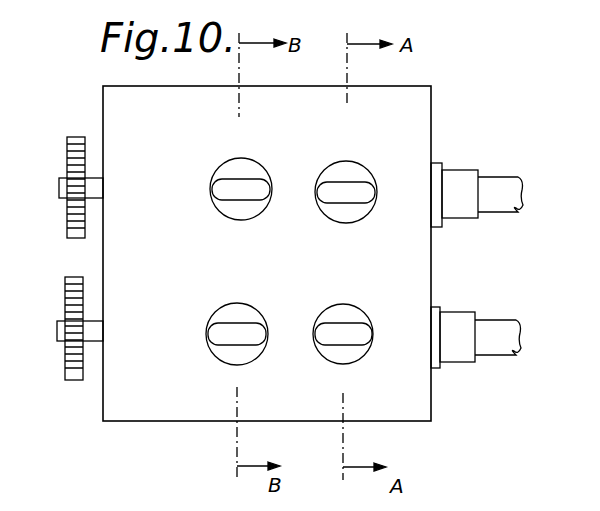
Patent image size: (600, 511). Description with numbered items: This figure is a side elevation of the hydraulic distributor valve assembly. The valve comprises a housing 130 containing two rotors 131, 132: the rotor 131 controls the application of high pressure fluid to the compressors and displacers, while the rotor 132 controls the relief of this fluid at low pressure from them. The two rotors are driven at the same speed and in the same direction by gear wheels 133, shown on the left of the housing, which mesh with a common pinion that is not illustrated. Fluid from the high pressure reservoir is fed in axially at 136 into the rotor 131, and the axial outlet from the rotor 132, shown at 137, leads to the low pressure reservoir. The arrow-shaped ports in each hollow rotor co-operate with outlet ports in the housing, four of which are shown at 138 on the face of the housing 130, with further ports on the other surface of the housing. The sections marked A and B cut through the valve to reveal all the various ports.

The housing 130 is at (388, 256).
The rotor 131 is at (440, 173).
The rotor 132 is at (433, 313).
The gear wheels 133 is at (72, 138).
The axial inlet 136 is at (505, 190).
The axial outlet 137 is at (507, 332).
The outlet ports 138 is at (245, 185).